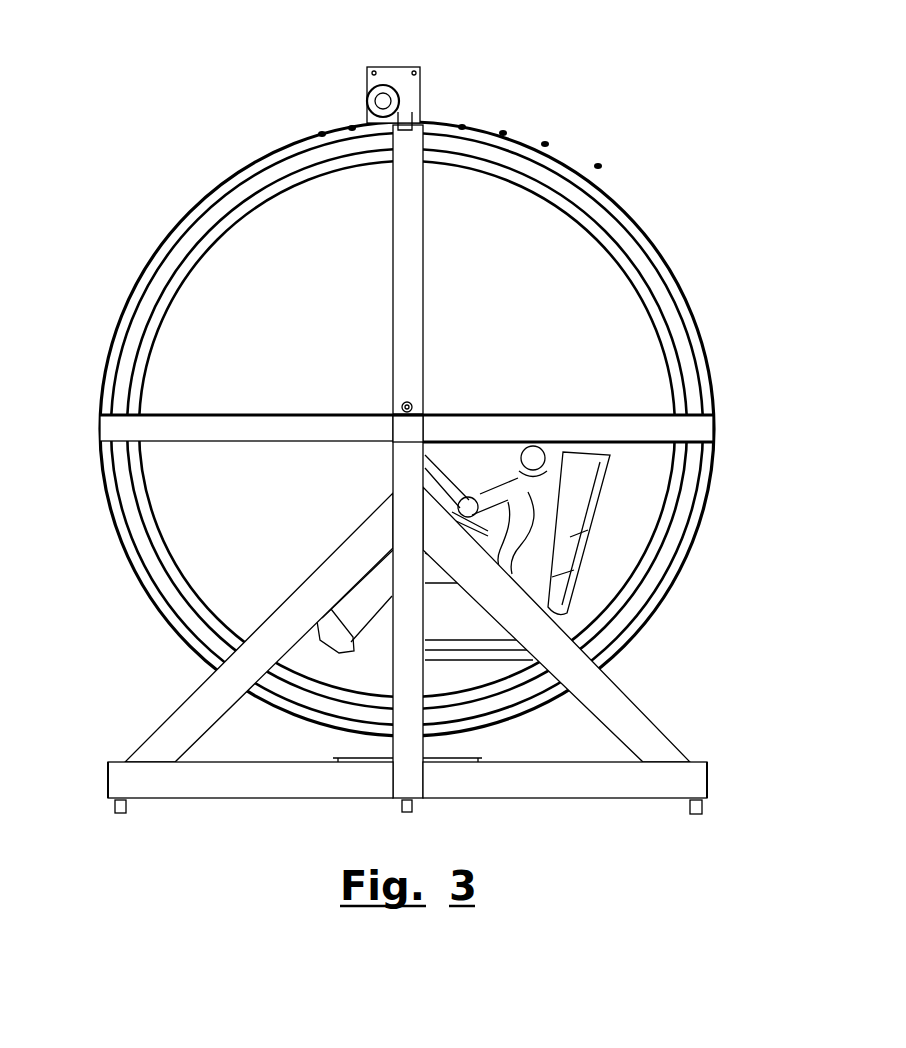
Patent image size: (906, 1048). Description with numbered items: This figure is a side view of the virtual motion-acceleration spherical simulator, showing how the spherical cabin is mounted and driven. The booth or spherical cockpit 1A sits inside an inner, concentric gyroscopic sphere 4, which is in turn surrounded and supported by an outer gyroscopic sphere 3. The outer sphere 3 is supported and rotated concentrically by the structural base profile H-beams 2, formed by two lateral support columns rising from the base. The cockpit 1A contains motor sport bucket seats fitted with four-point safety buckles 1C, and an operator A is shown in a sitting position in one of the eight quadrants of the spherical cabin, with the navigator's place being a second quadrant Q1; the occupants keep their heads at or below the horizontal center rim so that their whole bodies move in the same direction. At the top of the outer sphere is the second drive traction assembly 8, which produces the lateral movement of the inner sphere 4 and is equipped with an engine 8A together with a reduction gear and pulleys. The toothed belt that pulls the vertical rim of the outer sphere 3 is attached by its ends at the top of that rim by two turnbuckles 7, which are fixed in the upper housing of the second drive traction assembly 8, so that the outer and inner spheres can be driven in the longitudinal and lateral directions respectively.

The booth/spherical cockpit 1A is at (207, 297).
The 4-point safety buckles 1C is at (560, 588).
The structural base profile H-beams 2 is at (207, 707).
The outer gyroscopic sphere 3 is at (636, 220).
The inner gyroscopic sphere 4 is at (651, 288).
The turnbuckles 7 is at (504, 132).
The second drive traction assembly 8 is at (417, 82).
The engine 8A is at (368, 96).
The operator A is at (552, 485).
The second quadrant Q1 is at (630, 530).